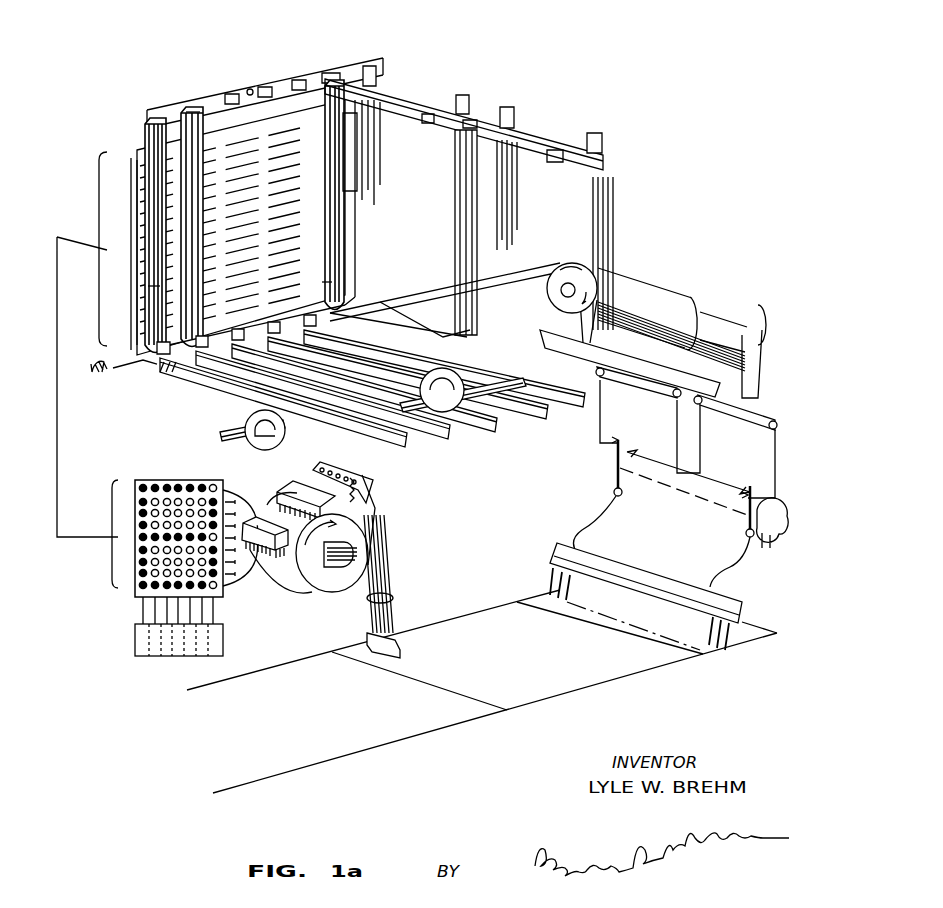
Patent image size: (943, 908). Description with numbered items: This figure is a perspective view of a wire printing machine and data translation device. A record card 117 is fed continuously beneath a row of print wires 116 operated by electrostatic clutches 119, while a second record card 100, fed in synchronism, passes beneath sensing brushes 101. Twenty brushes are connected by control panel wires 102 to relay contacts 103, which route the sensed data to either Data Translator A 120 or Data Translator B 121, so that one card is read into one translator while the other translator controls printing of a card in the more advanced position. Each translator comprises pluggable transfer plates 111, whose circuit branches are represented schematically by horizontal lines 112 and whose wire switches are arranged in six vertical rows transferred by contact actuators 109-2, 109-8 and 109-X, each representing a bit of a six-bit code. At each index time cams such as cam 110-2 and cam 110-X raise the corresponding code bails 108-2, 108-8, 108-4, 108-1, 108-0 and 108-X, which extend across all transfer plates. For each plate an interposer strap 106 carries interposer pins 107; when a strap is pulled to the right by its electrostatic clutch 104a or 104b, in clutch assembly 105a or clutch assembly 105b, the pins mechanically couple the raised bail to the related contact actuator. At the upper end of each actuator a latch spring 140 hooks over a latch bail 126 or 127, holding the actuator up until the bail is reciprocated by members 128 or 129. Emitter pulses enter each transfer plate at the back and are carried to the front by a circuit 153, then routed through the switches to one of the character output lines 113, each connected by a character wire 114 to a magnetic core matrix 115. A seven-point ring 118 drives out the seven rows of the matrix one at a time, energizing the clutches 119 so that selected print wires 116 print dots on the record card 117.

The second record card 100 is at (700, 648).
The sensing brushes 101 is at (740, 604).
The control panel wires 102 is at (584, 532).
The relay contacts 103 is at (614, 455).
The electrostatic clutch 104a is at (640, 276).
The electrostatic clutch 104b is at (762, 308).
The clutch assembly 105a is at (639, 400).
The clutch assembly 105b is at (739, 434).
The interposer strap 106 is at (535, 270).
The interposer pins 107 is at (157, 368).
The code bail 108-2 is at (240, 392).
The code bail 108-8 is at (440, 444).
The code bail 108-4 is at (487, 432).
The code bail 108-1 is at (536, 424).
The code bail 108-0 is at (578, 415).
The code bail 108-X is at (398, 346).
The contact actuator 109-2 is at (148, 290).
The contact actuator 109-8 is at (192, 116).
The contact actuator 109-X is at (328, 279).
The cam 110-2 is at (278, 432).
The cam 110-X is at (447, 373).
The transfer plate 111 is at (358, 268).
The horizontal lines 112 is at (268, 256).
The character output lines 113 is at (144, 206).
The character wire 114 is at (72, 250).
The magnetic core matrix 115 is at (176, 480).
The print wires 116 is at (383, 591).
The record card 117 is at (471, 653).
The seven-point ring 118 is at (222, 644).
The electrostatic clutches 119 is at (310, 604).
The Data Translator A 120 is at (400, 132).
The Data Translator B 121 is at (543, 178).
The latch bail 126 is at (169, 112).
The latch bail 127 is at (545, 148).
The members 128 is at (370, 66).
The members 129 is at (506, 107).
The latch spring 140 is at (165, 120).
The circuit 153 is at (308, 118).